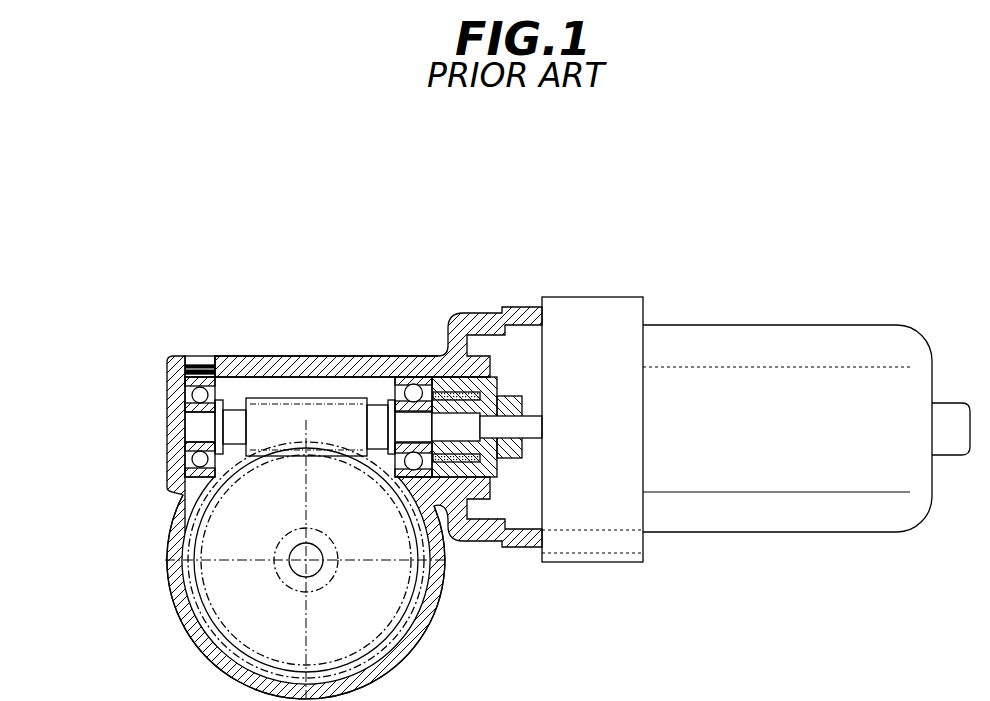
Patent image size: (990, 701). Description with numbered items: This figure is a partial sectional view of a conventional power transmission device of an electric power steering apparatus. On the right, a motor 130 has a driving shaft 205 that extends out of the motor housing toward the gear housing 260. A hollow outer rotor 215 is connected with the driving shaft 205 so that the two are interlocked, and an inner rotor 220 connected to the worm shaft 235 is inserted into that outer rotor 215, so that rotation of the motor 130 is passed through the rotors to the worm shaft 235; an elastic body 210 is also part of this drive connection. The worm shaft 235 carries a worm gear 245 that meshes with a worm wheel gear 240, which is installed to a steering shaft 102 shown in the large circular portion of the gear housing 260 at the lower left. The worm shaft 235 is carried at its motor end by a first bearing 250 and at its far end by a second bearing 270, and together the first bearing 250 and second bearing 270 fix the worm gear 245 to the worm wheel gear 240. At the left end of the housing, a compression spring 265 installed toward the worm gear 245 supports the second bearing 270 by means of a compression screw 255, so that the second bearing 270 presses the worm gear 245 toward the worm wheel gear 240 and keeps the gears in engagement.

The steering shaft 102 is at (288, 551).
The motor 130 is at (722, 335).
The driving shaft 205 is at (533, 415).
The elastic body 210 is at (461, 378).
The outer rotor 215 is at (462, 371).
The inner rotor 220 is at (488, 532).
The worm shaft 235 is at (233, 410).
The worm wheel gear 240 is at (407, 622).
The worm gear 245 is at (289, 399).
The first bearing 250 is at (418, 379).
The compression screw 255 is at (199, 356).
The gear housing 260 is at (358, 362).
The compression spring 265 is at (185, 370).
The second bearing 270 is at (187, 450).